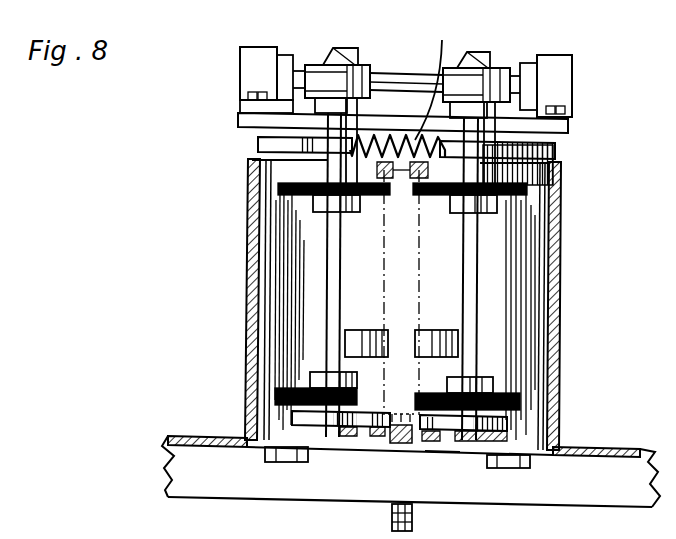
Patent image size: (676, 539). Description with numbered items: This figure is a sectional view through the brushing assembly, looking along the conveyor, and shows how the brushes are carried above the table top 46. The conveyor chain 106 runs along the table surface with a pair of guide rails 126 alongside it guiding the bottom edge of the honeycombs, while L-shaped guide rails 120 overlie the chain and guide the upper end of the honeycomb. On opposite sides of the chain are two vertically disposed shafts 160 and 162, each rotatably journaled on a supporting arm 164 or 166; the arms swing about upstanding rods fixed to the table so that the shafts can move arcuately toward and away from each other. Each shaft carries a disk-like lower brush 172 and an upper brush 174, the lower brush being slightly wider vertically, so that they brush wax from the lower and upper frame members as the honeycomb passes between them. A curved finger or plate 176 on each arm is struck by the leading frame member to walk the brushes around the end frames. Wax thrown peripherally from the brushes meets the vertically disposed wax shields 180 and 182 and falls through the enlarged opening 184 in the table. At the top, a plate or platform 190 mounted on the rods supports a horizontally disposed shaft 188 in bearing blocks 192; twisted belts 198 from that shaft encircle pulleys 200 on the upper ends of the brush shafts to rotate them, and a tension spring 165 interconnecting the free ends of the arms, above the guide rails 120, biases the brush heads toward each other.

The table top 46 is at (172, 438).
The conveyor chain 106 is at (393, 447).
The guide rails 120 is at (403, 140).
The guide rails 126 is at (440, 447).
The shaft 160 is at (337, 277).
The shaft 162 is at (472, 270).
The arm 164 is at (260, 142).
The tension spring 165 is at (442, 40).
The arm 166 is at (555, 155).
The lower brush 172 is at (277, 397).
The upper brush 174 is at (280, 186).
The curved finger or plate 176 is at (383, 328).
The wax shield 180 is at (252, 292).
The wax shield 182 is at (558, 306).
The opening 184 is at (532, 456).
The horizontally disposed shaft 188 is at (407, 73).
The plate or platform 190 is at (243, 124).
The bearing blocks 192 is at (252, 57).
The twisted belts 198 is at (347, 60).
The pulleys 200 is at (312, 65).